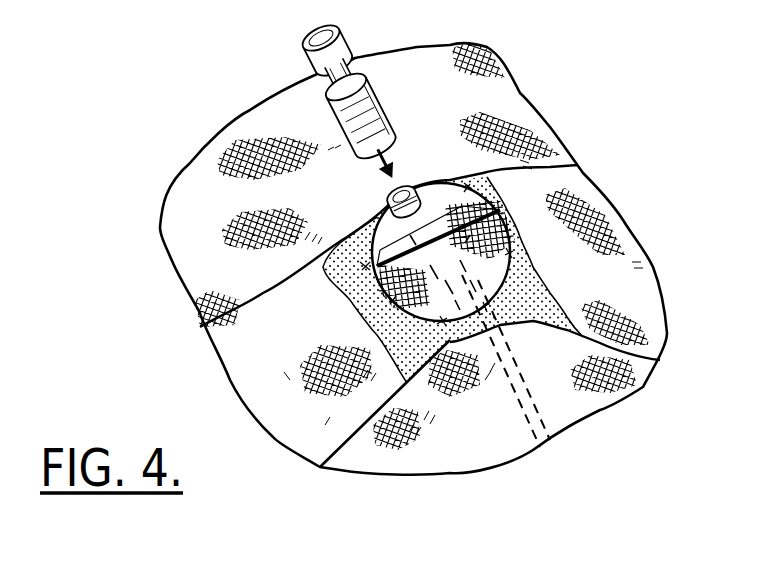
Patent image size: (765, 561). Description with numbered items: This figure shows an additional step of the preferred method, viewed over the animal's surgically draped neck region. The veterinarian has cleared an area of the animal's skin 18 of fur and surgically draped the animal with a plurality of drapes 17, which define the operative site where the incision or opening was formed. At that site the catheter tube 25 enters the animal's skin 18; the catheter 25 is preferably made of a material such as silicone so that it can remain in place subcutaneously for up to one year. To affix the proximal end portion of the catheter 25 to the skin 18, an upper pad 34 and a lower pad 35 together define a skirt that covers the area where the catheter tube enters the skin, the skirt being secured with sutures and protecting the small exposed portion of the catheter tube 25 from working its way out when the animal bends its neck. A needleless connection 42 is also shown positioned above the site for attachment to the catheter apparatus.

The surgical drape 17 is at (543, 145).
The animal's skin 18 is at (530, 308).
The catheter tube 25 is at (505, 400).
The upper pad 34 is at (470, 283).
The lower pad 35 is at (377, 215).
The needleless connection 42 is at (355, 58).